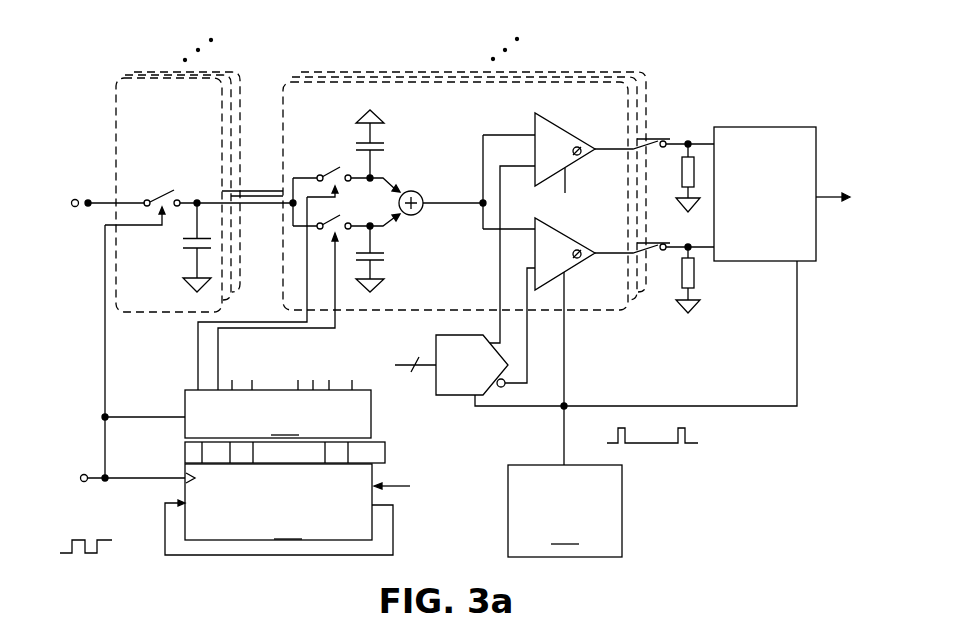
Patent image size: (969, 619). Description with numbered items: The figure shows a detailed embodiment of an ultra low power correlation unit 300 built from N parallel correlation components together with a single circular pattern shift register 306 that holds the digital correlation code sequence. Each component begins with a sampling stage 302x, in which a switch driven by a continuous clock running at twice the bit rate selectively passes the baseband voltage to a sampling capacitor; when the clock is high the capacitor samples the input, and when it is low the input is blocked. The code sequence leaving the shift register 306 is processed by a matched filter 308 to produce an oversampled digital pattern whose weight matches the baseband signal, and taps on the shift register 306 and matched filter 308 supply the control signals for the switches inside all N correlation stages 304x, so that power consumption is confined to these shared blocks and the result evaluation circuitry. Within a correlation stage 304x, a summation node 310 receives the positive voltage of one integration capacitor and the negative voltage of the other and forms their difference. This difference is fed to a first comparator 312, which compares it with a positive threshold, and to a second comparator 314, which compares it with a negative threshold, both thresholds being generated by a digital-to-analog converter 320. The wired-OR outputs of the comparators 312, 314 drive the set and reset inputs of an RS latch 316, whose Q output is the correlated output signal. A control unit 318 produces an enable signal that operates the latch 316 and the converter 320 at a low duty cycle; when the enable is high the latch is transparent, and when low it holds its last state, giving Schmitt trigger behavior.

The correlation unit 300 is at (762, 56).
The sampling stage 302x is at (112, 66).
The correlation stage 304x is at (286, 66).
The circular pattern shift register 306 is at (279, 498).
The matched filter 308 is at (278, 392).
The summation node 310 is at (428, 182).
The first comparator 312 is at (568, 116).
The second comparator 314 is at (568, 221).
The RS latch 316 is at (799, 118).
The control unit 318 is at (565, 511).
The digital-to-analog converter 320 is at (455, 404).